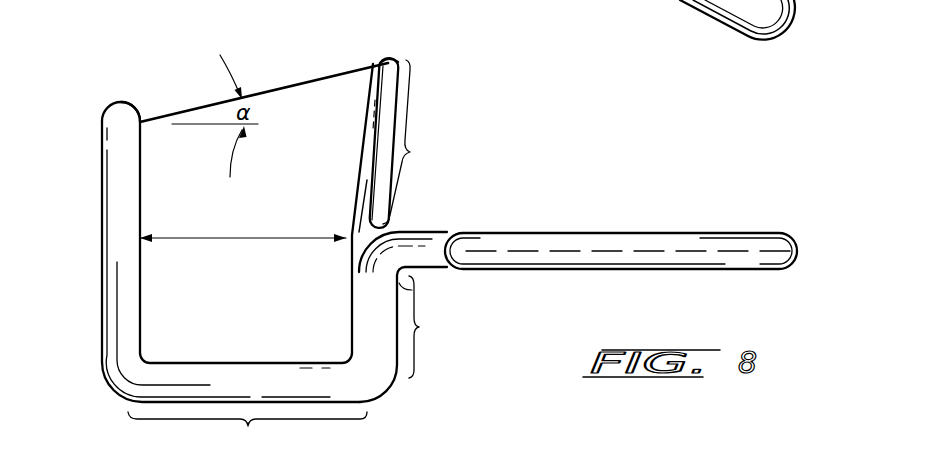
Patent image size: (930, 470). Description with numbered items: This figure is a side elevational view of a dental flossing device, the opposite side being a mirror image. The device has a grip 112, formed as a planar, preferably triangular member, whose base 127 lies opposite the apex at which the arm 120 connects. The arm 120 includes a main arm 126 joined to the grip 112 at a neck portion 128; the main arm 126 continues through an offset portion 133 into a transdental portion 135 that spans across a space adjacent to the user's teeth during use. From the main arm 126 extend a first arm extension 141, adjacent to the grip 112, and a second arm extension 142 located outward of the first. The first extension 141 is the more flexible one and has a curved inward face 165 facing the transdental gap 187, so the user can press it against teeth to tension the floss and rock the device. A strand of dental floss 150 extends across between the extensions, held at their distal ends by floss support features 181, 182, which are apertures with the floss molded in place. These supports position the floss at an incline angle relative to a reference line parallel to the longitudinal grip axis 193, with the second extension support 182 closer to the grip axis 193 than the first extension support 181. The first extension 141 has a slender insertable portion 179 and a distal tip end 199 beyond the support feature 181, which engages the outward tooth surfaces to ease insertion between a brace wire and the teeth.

The arm 120 is at (396, 408).
The second arm extension 142 is at (115, 120).
The floss support feature 182 is at (152, 113).
The curved inward face 165 is at (350, 205).
The main arm 126 is at (373, 370).
The neck portion 128 is at (432, 233).
The grip 112 is at (585, 232).
The base 127 is at (795, 250).
The longitudinal grip axis 193 is at (631, 250).
The distal tip end 199 is at (388, 62).
The floss support feature 181 is at (380, 62).
The first arm extension 141 is at (377, 100).
The strand of dental floss 150 is at (274, 90).
The insertable portion 179 is at (417, 142).
The offset portion 133 is at (439, 327).
The transdental portion 135 is at (247, 436).
The transdental gap 187 is at (217, 240).